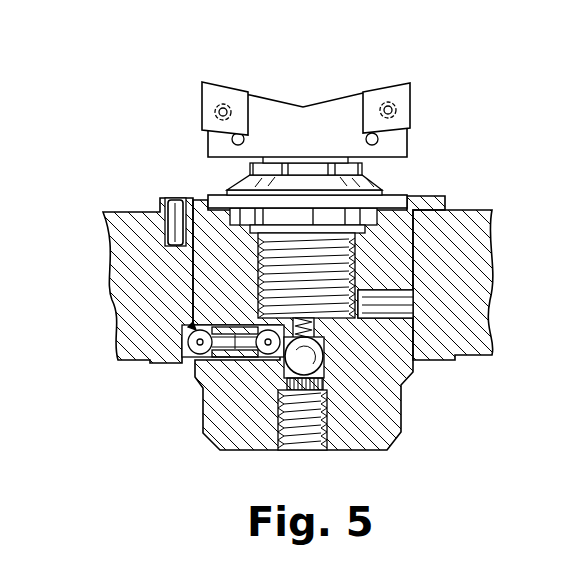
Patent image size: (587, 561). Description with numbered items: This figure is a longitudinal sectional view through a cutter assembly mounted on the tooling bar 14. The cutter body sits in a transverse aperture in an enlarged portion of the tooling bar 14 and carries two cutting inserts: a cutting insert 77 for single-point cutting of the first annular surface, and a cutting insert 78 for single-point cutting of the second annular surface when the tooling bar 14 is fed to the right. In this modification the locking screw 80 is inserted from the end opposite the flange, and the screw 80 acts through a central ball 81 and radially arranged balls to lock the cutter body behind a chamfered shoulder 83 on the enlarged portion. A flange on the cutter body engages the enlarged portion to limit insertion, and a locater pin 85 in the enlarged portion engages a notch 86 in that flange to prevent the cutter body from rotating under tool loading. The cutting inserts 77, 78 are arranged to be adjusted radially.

The tooling bar 14 is at (138, 350).
The cutting insert 77 is at (213, 93).
The cutting insert 78 is at (388, 92).
The screw 80 is at (283, 410).
The central ball 81 is at (327, 377).
The chamfered shoulder 83 is at (422, 342).
The locater pin 85 is at (170, 220).
The notch 86 is at (170, 198).